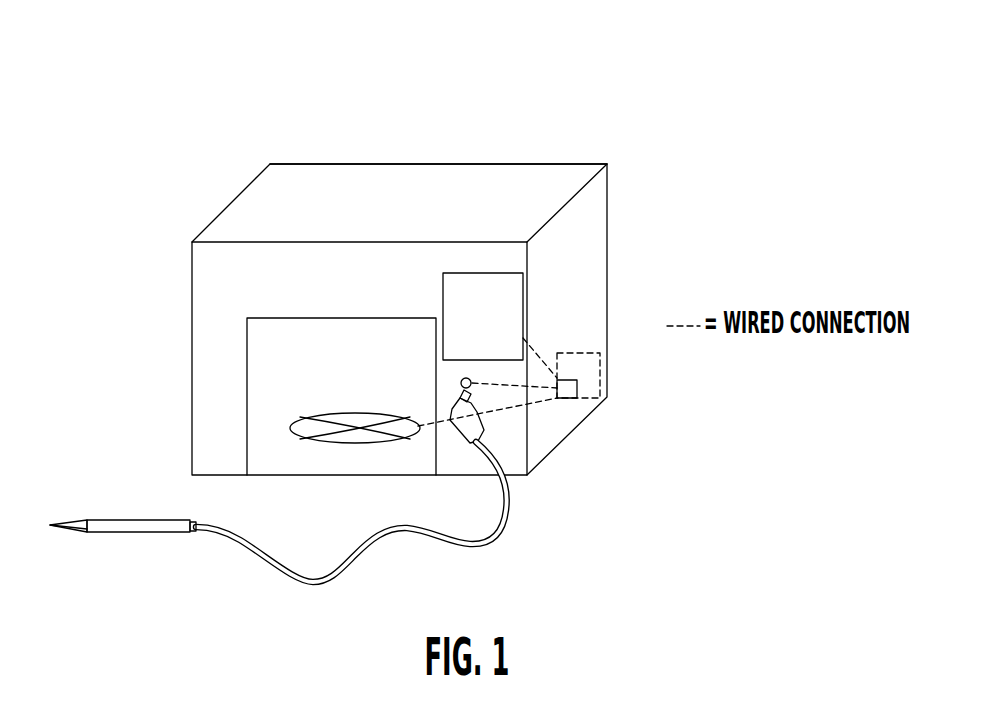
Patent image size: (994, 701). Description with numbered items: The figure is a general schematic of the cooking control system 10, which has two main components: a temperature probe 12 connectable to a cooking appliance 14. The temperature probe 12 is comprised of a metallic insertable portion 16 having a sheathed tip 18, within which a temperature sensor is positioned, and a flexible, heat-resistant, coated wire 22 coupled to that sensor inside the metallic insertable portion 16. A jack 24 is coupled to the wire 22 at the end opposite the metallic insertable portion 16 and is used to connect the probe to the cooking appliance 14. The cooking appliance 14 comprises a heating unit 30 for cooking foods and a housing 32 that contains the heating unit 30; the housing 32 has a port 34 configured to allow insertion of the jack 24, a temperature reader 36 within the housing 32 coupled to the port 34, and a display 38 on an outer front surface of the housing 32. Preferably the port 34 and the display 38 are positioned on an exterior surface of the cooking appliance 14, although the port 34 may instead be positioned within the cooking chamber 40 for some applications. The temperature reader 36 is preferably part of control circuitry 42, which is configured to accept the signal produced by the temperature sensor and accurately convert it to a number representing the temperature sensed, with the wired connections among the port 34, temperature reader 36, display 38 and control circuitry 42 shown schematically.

The cooking control system 10 is at (645, 88).
The temperature probe 12 is at (123, 517).
The cooking appliance 14 is at (186, 286).
The metallic insertable portion 16 is at (117, 533).
The sheathed tip 18 is at (66, 530).
The flexible heat-resistant coated wire 22 is at (472, 548).
The jack 24 is at (458, 434).
The heating unit 30 is at (284, 426).
The housing 32 is at (238, 212).
The port 34 is at (461, 381).
The temperature reader 36 is at (578, 392).
The display 38 is at (516, 291).
The cooking chamber 40 is at (268, 377).
The control circuitry 42 is at (603, 372).